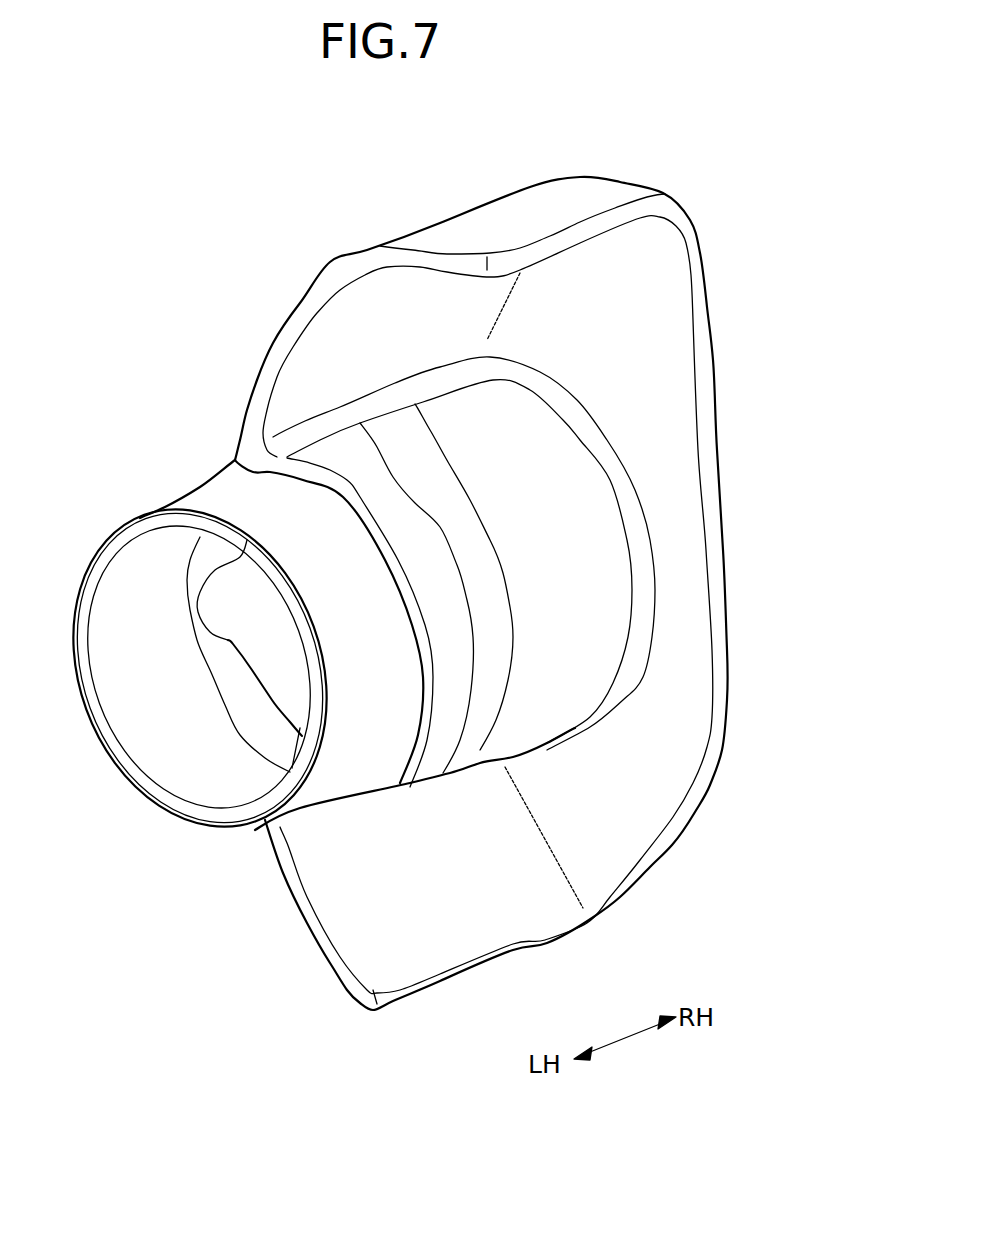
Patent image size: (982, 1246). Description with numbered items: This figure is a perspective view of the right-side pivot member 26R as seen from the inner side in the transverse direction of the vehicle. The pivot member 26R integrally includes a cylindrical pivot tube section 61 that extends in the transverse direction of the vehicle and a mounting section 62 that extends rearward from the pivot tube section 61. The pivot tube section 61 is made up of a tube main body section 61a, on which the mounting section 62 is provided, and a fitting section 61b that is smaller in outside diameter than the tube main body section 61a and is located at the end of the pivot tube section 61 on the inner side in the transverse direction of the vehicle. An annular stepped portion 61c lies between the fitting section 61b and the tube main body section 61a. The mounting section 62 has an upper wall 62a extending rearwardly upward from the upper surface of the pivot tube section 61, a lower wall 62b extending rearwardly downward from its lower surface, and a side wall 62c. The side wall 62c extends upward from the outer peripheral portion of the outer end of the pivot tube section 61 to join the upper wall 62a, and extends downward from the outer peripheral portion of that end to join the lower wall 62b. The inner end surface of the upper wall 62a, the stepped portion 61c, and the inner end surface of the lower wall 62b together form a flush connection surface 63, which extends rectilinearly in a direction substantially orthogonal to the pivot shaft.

The pivot member 26R is at (277, 164).
The pivot tube section 61 is at (110, 518).
The tube main body section 61a is at (587, 563).
The fitting section 61b is at (330, 640).
The stepped portion 61c is at (420, 722).
The mounting section 62 is at (618, 182).
The upper wall 62a is at (312, 360).
The lower wall 62b is at (458, 940).
The side wall 62c is at (660, 370).
The connection surface 63 is at (252, 442).